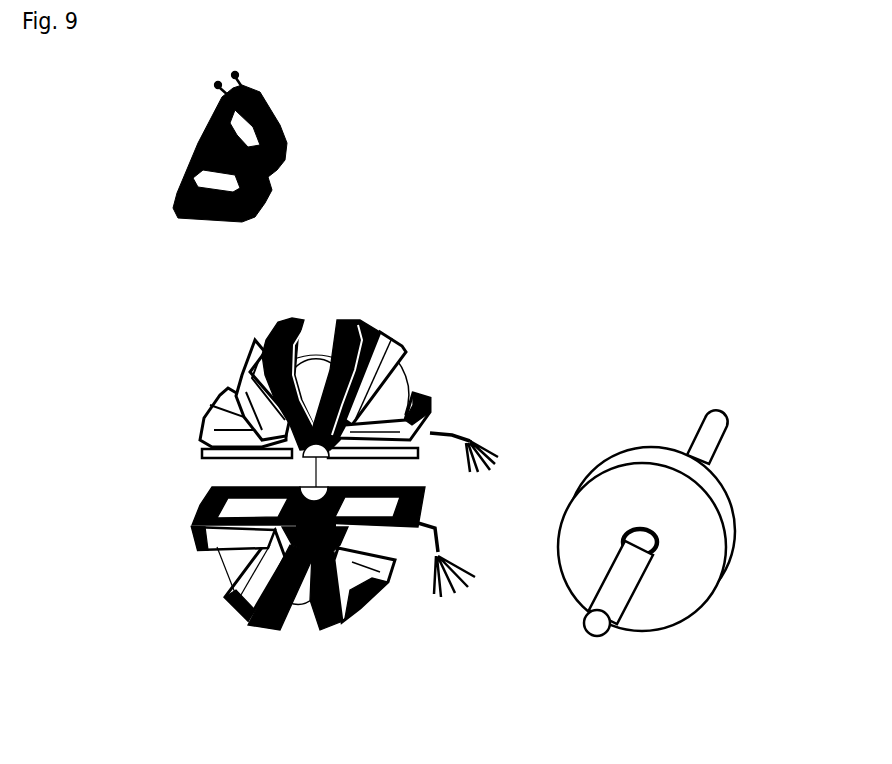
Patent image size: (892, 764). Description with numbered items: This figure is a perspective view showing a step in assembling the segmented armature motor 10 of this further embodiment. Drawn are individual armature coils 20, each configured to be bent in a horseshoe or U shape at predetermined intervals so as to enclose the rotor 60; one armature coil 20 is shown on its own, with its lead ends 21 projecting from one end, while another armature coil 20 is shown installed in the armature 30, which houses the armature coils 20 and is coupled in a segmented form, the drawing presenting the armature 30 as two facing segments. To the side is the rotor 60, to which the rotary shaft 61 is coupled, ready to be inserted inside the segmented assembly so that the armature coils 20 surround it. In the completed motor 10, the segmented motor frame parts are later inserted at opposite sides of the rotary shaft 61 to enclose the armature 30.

The segmented armature motor 10 is at (522, 282).
The armature coil 20 is at (290, 128).
The coil lead wires 21 is at (216, 86).
The armature 30 is at (195, 510).
The rotor 60 is at (728, 550).
The rotary shaft 61 is at (716, 452).